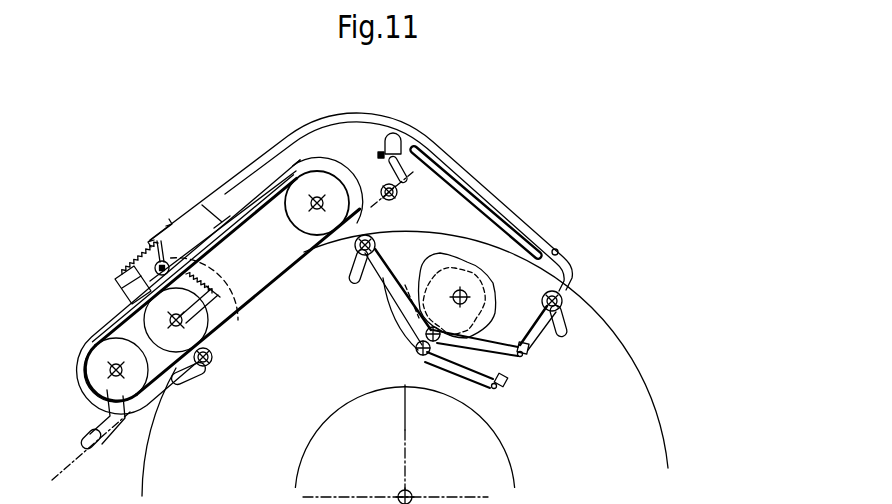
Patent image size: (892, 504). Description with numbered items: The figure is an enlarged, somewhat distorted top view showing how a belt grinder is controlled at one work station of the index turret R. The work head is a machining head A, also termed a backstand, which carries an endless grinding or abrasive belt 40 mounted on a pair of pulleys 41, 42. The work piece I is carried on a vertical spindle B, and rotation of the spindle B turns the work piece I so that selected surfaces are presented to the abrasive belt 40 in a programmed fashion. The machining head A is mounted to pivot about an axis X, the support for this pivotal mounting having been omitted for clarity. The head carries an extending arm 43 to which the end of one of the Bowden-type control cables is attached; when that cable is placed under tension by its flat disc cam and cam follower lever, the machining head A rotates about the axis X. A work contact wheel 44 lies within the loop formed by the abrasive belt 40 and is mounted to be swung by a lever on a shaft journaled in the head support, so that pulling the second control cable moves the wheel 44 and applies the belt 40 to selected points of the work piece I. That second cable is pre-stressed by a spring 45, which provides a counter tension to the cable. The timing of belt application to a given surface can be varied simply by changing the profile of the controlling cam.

The machining head A is at (245, 205).
The index turret R is at (405, 363).
The abrasive belt 40 is at (272, 273).
The pulley 41 is at (105, 356).
The pulley 42 is at (319, 178).
The extending arm 43 is at (384, 168).
The work contact wheel 44 is at (112, 297).
The spring 45 is at (134, 242).
The spindle B is at (216, 357).
The work piece I is at (190, 372).
The pivot axis X is at (239, 326).